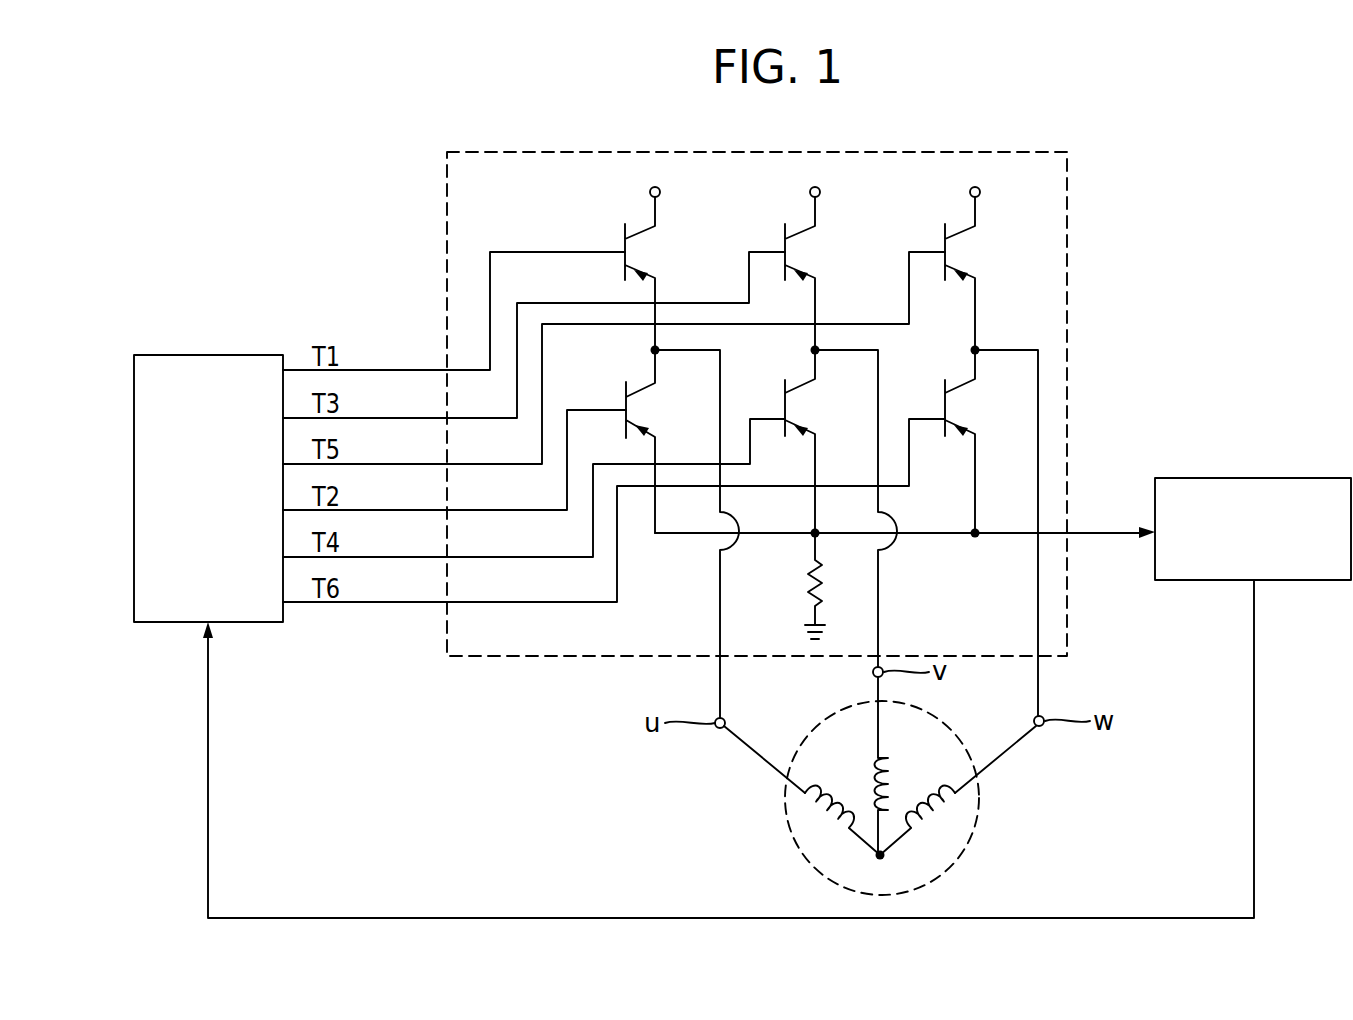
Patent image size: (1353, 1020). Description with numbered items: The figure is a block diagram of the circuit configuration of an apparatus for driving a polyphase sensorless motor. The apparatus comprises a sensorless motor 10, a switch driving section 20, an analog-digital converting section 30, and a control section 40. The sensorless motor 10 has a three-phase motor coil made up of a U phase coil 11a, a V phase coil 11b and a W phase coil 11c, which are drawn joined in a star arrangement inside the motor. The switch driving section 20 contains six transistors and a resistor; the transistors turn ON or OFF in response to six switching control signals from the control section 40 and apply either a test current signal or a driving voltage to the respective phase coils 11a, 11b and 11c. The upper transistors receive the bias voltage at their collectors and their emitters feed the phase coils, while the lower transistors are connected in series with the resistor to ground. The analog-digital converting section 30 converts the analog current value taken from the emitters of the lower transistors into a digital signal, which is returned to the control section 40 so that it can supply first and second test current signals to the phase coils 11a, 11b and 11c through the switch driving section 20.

The sensorless motor 10 is at (900, 785).
The U phase coil 11a is at (824, 810).
The V phase coil 11b is at (875, 780).
The W phase coil 11c is at (945, 825).
The switch driving section 20 is at (1067, 302).
The analog-digital converting section 30 is at (1253, 478).
The control section 40 is at (206, 355).